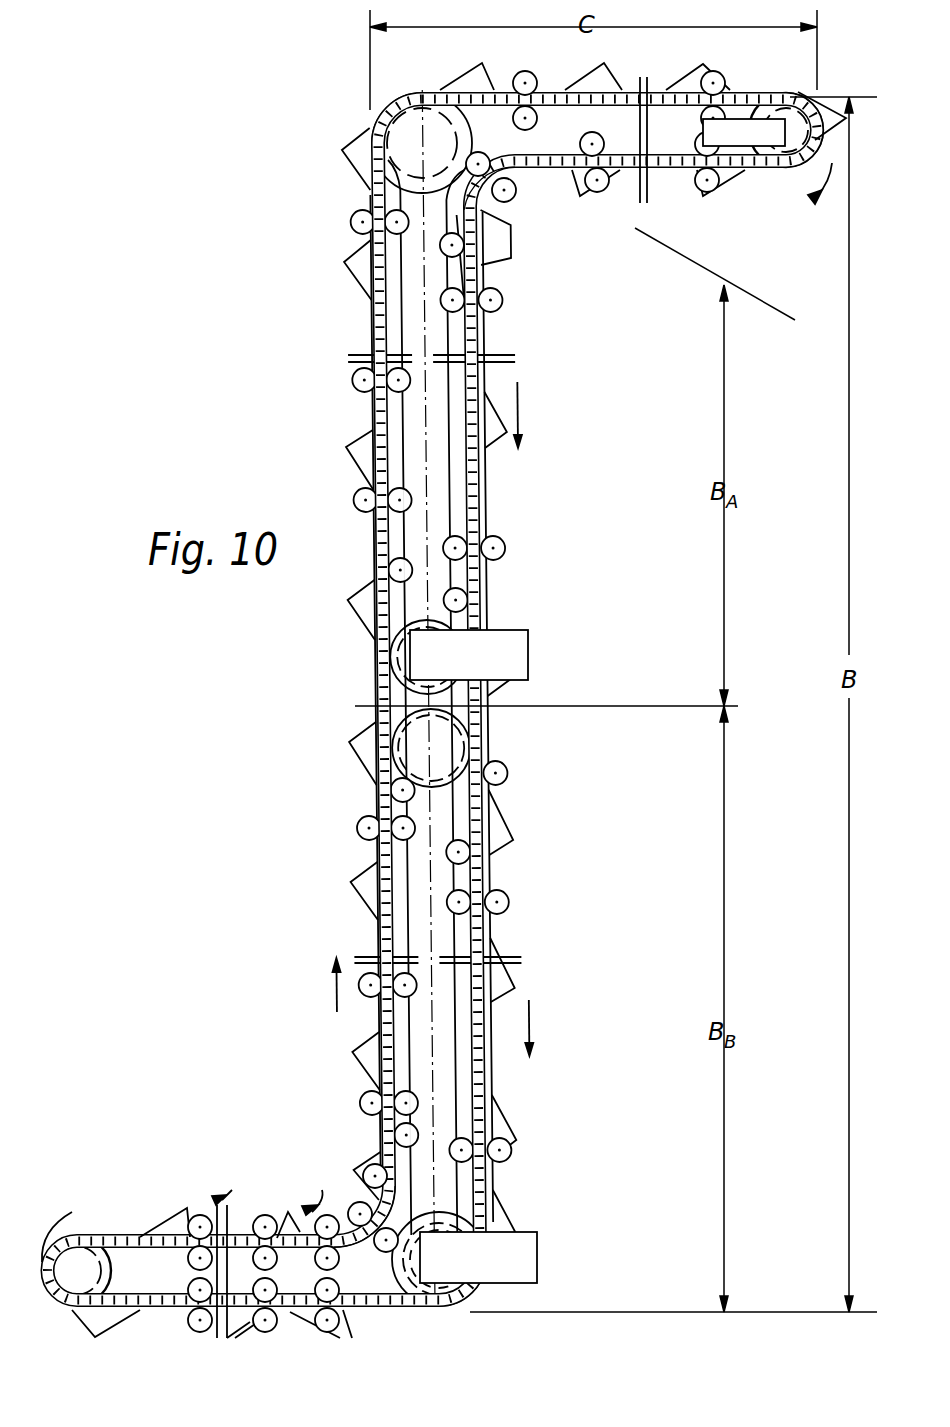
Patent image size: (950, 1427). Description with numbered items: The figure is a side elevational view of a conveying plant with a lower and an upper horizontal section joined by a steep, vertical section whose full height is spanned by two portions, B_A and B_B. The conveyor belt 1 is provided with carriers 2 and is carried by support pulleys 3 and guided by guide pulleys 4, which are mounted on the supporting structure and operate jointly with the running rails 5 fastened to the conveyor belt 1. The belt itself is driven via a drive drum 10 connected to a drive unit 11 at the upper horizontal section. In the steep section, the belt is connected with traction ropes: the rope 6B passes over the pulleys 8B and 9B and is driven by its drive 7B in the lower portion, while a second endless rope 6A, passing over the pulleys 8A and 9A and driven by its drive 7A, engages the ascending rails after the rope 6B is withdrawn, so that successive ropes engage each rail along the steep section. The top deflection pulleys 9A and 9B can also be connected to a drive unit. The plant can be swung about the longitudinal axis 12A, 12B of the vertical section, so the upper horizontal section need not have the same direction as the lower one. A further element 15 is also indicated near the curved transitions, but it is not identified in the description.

The conveyor belt 1 is at (486, 336).
The carriers 2 is at (356, 288).
The support pulleys 3 is at (196, 1258).
The guide pulleys 4 is at (200, 1214).
The running rails 5 is at (488, 372).
The second endless rope 6A is at (508, 207).
The traction rope 6B is at (376, 1210).
The drive unit 7A is at (528, 656).
The drive unit 7B is at (537, 1260).
The drive pulley 8A is at (470, 630).
The drive pulley 8B is at (439, 1259).
The top deflection pulley 9A is at (404, 149).
The top deflection pulley 9B is at (412, 762).
The drive drum 10 is at (790, 118).
The drive unit 11 is at (745, 150).
The longitudinal axis 12A is at (438, 498).
The longitudinal axis 12B is at (438, 1102).
The chain guide channel 15 is at (498, 256).